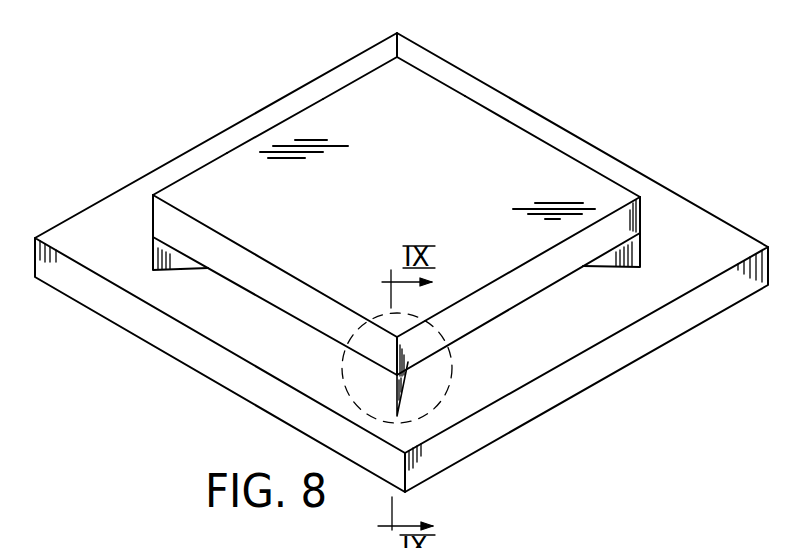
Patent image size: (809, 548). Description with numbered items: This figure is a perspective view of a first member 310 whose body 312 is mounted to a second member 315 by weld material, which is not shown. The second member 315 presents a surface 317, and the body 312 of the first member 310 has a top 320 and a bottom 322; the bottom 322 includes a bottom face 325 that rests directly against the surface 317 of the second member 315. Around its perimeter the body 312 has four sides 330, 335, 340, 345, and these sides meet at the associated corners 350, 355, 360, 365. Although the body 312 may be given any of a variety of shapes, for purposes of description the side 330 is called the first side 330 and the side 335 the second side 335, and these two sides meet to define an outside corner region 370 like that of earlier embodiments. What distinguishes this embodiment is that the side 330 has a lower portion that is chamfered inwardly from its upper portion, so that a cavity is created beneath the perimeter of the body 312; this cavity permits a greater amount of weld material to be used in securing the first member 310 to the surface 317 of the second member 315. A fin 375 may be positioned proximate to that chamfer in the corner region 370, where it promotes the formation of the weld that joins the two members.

The first member 310 is at (420, 123).
The body 312 is at (532, 135).
The second member 315 is at (153, 183).
The surface 317 is at (224, 142).
The top 320 is at (477, 180).
The bottom 322 is at (572, 277).
The bottom face 325 is at (618, 267).
The first side 330 is at (504, 303).
The second side 335 is at (323, 333).
The side 340 is at (323, 97).
The side 345 is at (465, 96).
The corner 350 is at (398, 338).
The corner 355 is at (150, 198).
The corner 360 is at (402, 37).
The corner 365 is at (642, 206).
The outside corner region 370 is at (527, 234).
The fin 375 is at (393, 388).